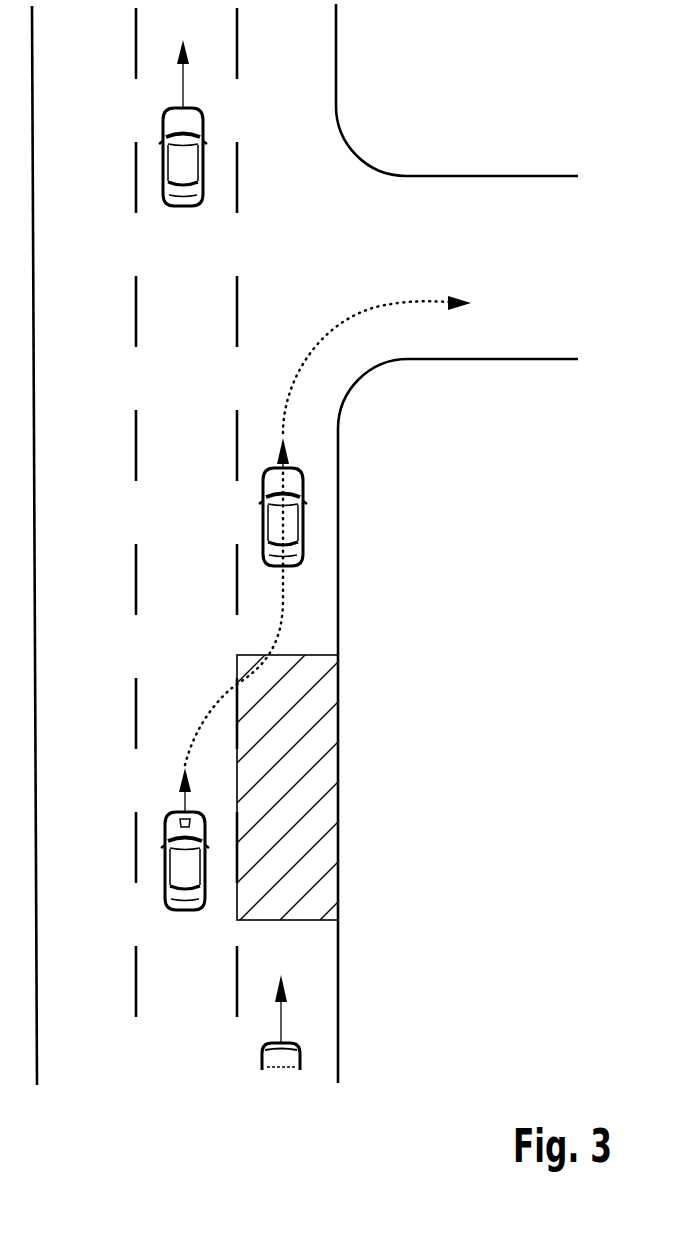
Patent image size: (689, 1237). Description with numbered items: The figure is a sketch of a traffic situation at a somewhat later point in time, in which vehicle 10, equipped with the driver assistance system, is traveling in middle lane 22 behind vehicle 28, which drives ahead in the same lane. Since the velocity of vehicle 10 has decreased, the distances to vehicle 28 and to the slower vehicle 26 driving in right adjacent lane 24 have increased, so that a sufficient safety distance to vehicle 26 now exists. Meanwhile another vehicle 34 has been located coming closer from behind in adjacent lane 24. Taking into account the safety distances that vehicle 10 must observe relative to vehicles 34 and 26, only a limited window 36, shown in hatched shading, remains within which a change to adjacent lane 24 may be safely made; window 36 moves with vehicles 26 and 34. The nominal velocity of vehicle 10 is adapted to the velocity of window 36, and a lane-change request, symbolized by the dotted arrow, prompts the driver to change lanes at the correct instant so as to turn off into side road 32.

The vehicle 10 is at (165, 828).
The middle lane 22 is at (200, 516).
The right adjacent lane 24 is at (298, 60).
The vehicle 26 is at (303, 476).
The vehicle 28 is at (163, 124).
The side road 32 is at (515, 361).
The vehicle 34 is at (300, 1053).
The window 36 is at (330, 766).